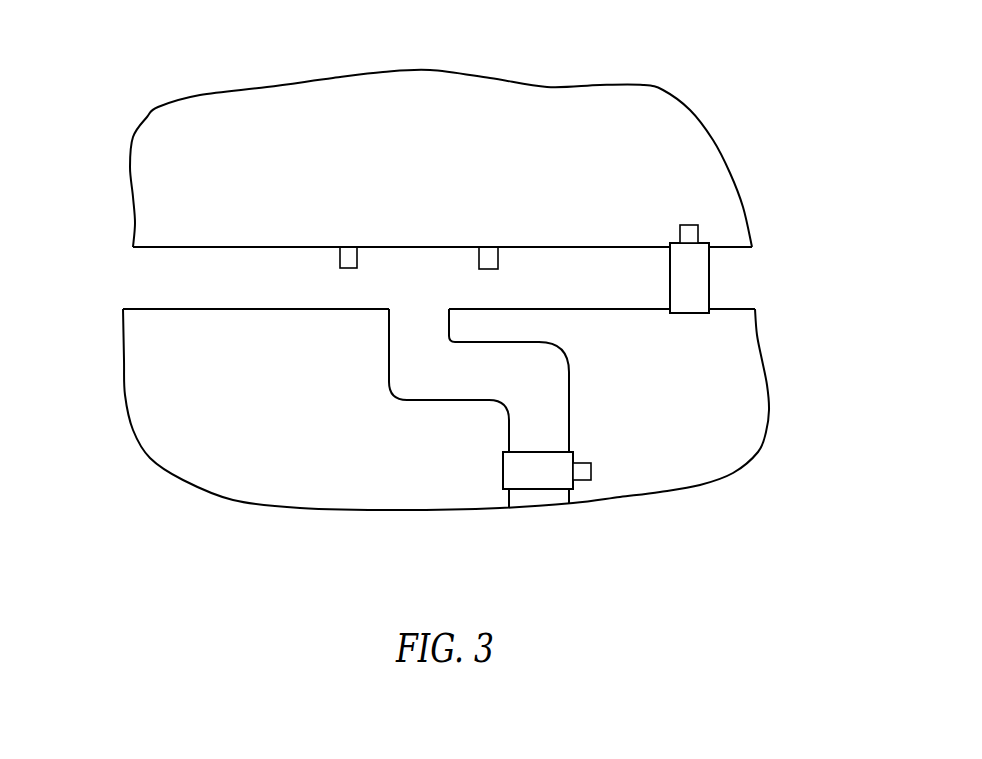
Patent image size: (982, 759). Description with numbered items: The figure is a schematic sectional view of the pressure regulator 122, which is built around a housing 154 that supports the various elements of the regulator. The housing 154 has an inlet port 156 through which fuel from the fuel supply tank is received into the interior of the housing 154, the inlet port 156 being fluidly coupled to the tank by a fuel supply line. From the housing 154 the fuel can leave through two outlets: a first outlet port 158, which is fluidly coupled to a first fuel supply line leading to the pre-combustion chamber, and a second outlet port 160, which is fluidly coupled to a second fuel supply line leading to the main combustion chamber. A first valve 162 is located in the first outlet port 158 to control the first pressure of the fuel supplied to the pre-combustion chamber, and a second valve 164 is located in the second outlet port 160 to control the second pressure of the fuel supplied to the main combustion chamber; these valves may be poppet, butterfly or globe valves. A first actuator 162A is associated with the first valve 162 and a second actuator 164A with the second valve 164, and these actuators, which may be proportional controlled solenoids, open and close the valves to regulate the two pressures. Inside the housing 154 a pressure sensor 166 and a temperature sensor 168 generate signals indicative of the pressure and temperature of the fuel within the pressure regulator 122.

The pressure regulator 122 is at (750, 50).
The housing 154 is at (557, 107).
The inlet port 156 is at (145, 248).
The first outlet port 158 is at (730, 250).
The second outlet port 160 is at (567, 497).
The first valve 162 is at (709, 291).
The first actuator 162A is at (691, 224).
The second valve 164 is at (503, 472).
The second actuator 164A is at (592, 470).
The pressure sensor 166 is at (348, 258).
The temperature sensor 168 is at (490, 262).